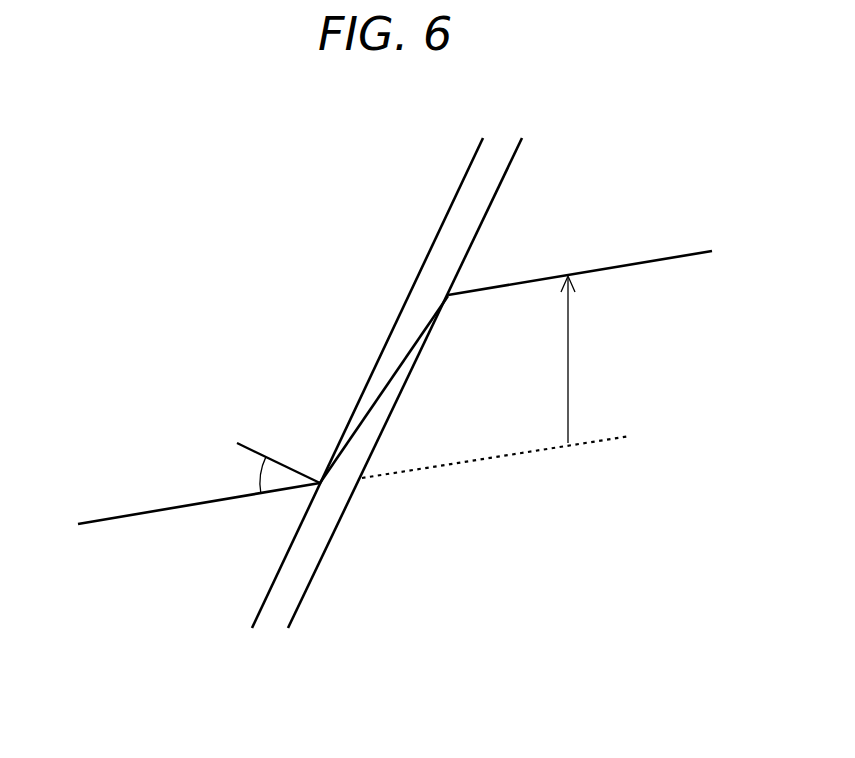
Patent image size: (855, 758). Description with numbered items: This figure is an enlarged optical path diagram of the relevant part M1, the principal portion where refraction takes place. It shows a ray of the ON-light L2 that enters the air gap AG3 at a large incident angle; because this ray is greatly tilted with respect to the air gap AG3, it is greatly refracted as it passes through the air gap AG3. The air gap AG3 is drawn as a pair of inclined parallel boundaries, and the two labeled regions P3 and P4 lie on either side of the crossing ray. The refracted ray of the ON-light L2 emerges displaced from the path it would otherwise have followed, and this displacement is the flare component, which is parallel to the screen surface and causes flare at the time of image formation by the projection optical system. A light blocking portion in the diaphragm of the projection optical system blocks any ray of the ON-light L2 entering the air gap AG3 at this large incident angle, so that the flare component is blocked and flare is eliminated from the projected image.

The relevant part M1 is at (211, 203).
The air gap AG3 is at (473, 203).
The ON-light L2 is at (603, 266).
The first plane P3 is at (322, 412).
The second plane P4 is at (475, 412).